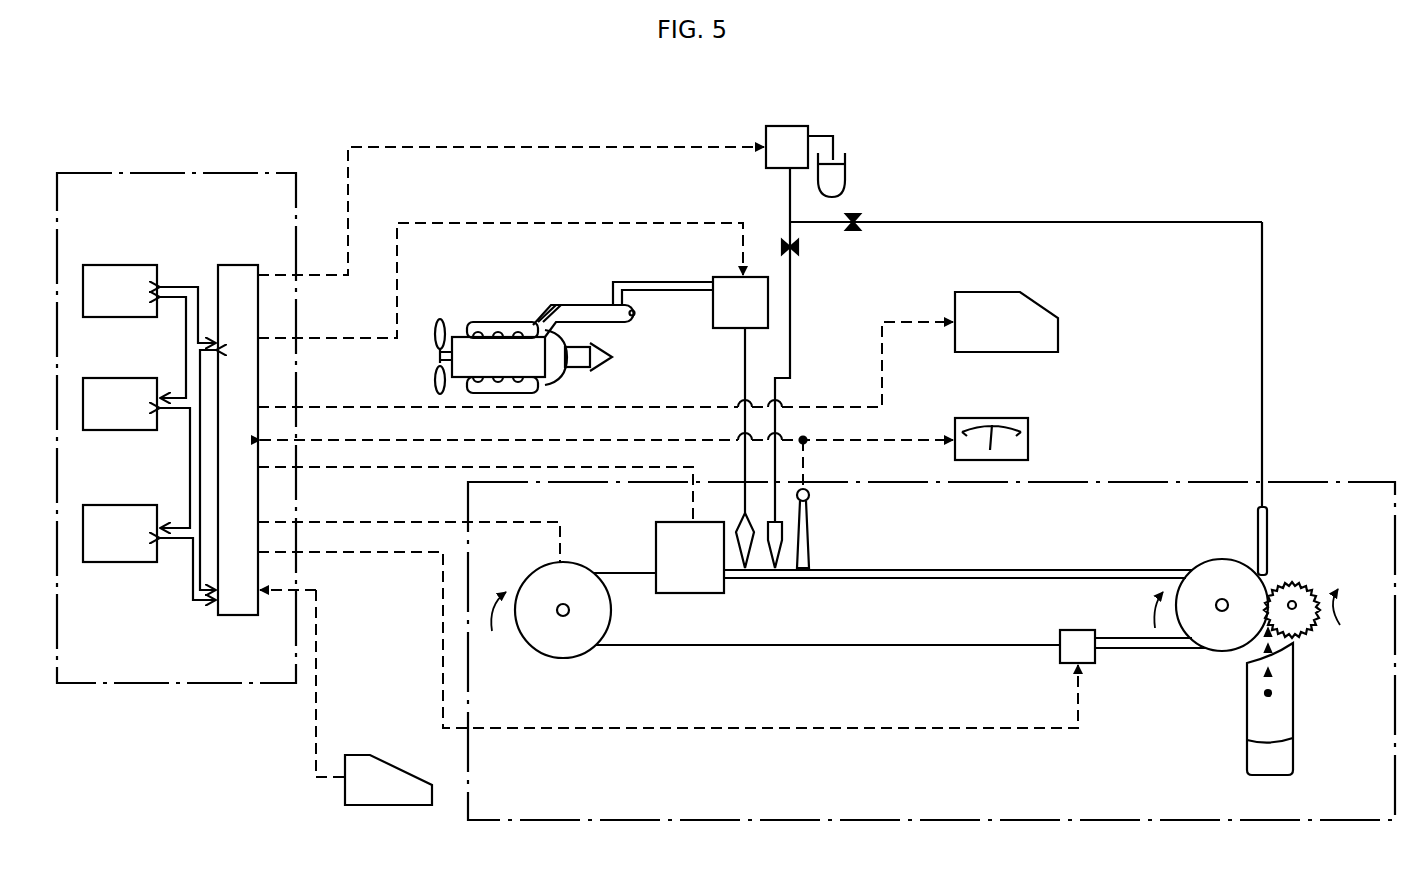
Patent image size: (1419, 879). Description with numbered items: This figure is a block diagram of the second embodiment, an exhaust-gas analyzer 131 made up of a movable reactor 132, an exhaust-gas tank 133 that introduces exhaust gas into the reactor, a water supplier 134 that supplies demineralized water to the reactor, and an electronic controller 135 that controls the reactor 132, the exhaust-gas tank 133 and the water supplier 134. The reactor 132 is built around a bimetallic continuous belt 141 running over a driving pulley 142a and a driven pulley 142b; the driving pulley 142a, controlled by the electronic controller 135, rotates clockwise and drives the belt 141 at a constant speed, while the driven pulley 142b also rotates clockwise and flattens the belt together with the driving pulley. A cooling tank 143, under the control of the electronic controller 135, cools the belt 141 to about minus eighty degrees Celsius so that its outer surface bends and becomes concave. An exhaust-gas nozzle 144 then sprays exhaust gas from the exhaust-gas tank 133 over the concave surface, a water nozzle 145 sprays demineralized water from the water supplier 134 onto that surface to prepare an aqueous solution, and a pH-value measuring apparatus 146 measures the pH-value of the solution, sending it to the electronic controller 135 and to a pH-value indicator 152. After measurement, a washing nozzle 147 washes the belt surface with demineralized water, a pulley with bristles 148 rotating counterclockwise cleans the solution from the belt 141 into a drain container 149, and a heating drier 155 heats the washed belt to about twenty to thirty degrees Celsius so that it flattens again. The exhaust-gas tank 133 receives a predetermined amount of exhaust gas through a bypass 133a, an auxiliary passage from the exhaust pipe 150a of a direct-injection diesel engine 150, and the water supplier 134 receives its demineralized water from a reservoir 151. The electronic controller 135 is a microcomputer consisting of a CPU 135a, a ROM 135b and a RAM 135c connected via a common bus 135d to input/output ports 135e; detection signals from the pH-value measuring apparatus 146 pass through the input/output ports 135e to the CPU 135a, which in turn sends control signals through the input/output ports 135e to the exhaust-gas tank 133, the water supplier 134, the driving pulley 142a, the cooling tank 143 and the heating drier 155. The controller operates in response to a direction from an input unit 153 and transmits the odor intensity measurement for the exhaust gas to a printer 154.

The exhaust-gas analyzer 131 is at (1006, 42).
The movable reactor 132 is at (1280, 481).
The exhaust-gas tank 133 is at (720, 330).
The bypass 133a is at (660, 269).
The water supplier 134 is at (787, 126).
The electronic controller 135 is at (197, 688).
The CPU 135a is at (127, 265).
The ROM 135b is at (127, 378).
The RAM 135c is at (127, 505).
The common bus 135d is at (187, 582).
The input/output ports 135e is at (247, 618).
The bimetallic continuous belt 141 is at (790, 648).
The driving pulley 142a is at (578, 659).
The driven pulley 142b is at (1210, 651).
The cooling tank 143 is at (656, 521).
The exhaust-gas nozzle 144 is at (745, 520).
The water nozzle 145 is at (781, 556).
The pH-value measuring apparatus 146 is at (811, 556).
The washing nozzle 147 is at (1268, 557).
The pulley with bristles 148 is at (1305, 585).
The drain container 149 is at (1293, 716).
The direct-injection diesel engine 150 is at (492, 322).
The exhaust pipe 150a is at (600, 322).
The reservoir 151 is at (847, 178).
The pH-value indicator 152 is at (1028, 438).
The input unit 153 is at (389, 808).
The printer 154 is at (1058, 326).
The heating drier 155 is at (1092, 665).